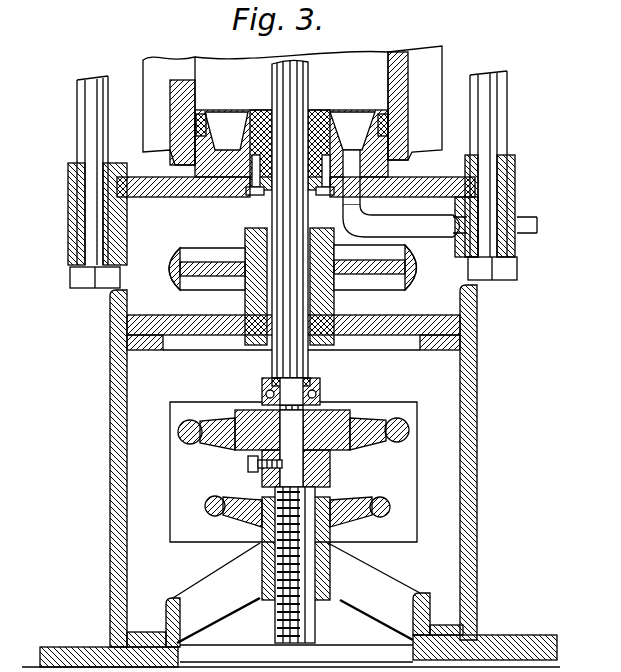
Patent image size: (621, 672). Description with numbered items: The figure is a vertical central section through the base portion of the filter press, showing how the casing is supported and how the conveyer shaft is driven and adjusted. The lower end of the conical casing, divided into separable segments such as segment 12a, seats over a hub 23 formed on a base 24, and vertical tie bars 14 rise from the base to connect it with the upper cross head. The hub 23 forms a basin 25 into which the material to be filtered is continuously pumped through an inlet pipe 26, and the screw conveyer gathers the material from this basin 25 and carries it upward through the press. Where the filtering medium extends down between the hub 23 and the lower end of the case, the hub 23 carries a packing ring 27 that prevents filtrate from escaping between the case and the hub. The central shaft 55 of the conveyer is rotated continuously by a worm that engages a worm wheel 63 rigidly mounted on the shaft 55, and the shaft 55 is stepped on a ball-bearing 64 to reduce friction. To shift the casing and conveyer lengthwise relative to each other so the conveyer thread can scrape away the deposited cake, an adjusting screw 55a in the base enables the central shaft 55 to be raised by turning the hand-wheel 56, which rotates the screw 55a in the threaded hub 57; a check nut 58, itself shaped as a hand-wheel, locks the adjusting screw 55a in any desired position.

The separable segment 12a is at (430, 80).
The vertical tie bar 14 is at (88, 135).
The hub 23 is at (341, 118).
The base 24 is at (432, 180).
The basin 25 is at (208, 150).
The inlet pipe 26 is at (522, 224).
The packing ring 27 is at (201, 120).
The central shaft 55 is at (303, 362).
The adjusting screw 55a is at (316, 615).
The hand-wheel 56 is at (400, 431).
The threaded hub 57 is at (330, 565).
The check nut 58 is at (366, 505).
The worm wheel 63 is at (200, 257).
The ball-bearing 64 is at (325, 392).